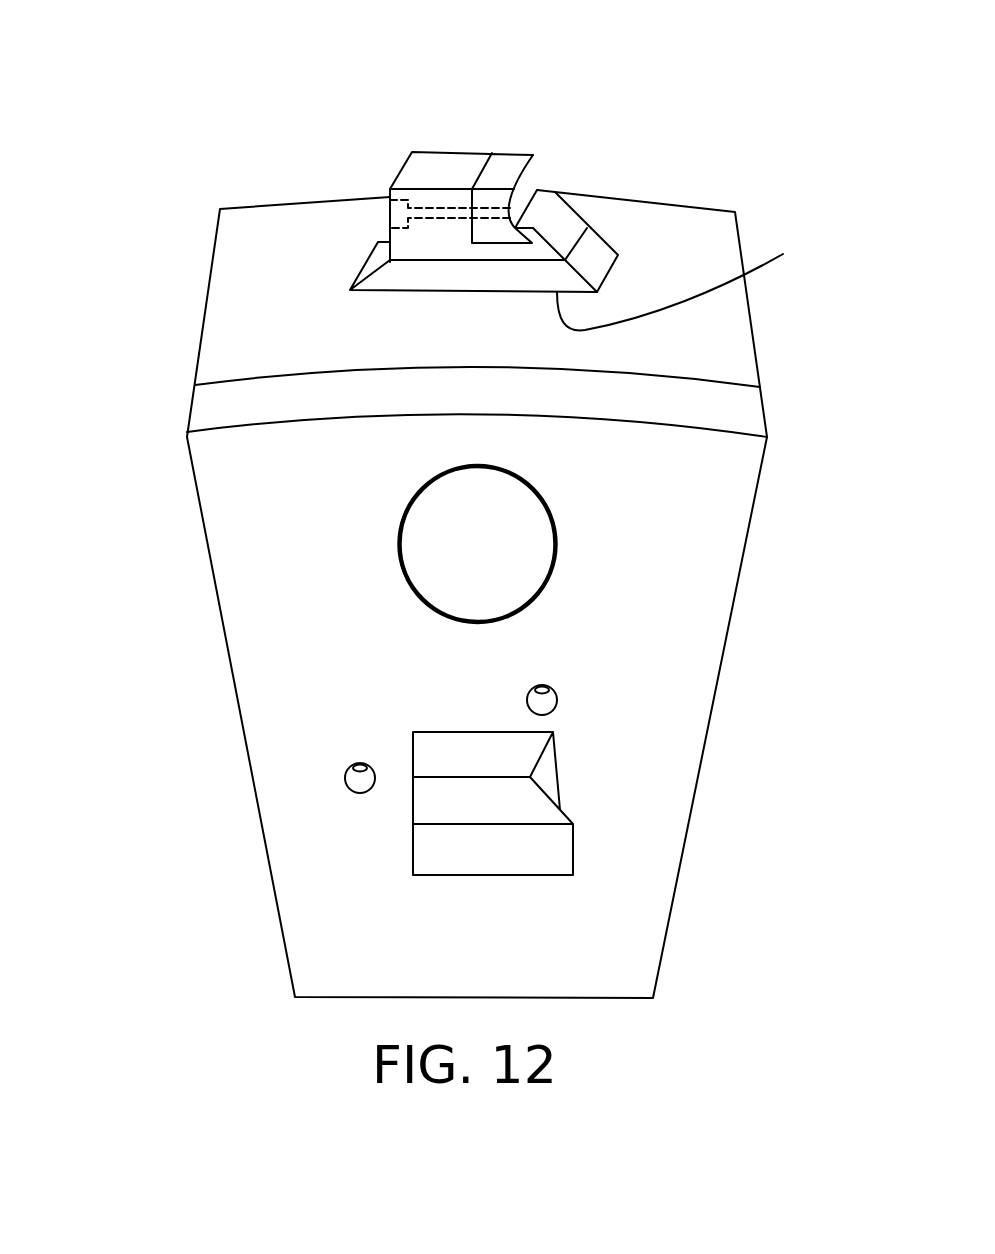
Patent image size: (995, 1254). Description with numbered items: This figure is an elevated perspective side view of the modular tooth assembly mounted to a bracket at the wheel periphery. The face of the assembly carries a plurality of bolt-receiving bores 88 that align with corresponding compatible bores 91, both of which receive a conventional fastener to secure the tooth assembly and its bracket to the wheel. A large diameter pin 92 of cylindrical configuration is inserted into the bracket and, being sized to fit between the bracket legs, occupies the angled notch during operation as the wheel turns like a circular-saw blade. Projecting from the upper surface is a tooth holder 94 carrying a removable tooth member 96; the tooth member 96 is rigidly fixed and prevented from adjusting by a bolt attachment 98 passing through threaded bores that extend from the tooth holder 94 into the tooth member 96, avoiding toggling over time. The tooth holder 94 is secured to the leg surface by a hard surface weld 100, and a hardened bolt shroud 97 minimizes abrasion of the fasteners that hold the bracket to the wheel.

The bolt-receiving bores 88 is at (557, 695).
The compatible bores 91 is at (292, 690).
The large diameter pin 92 is at (450, 550).
The tooth holder 94 is at (452, 152).
The removable tooth member 96 is at (521, 153).
The bolt shroud 97 is at (477, 875).
The bolt attachment 98 is at (388, 213).
The hard surface weld 100 is at (783, 254).